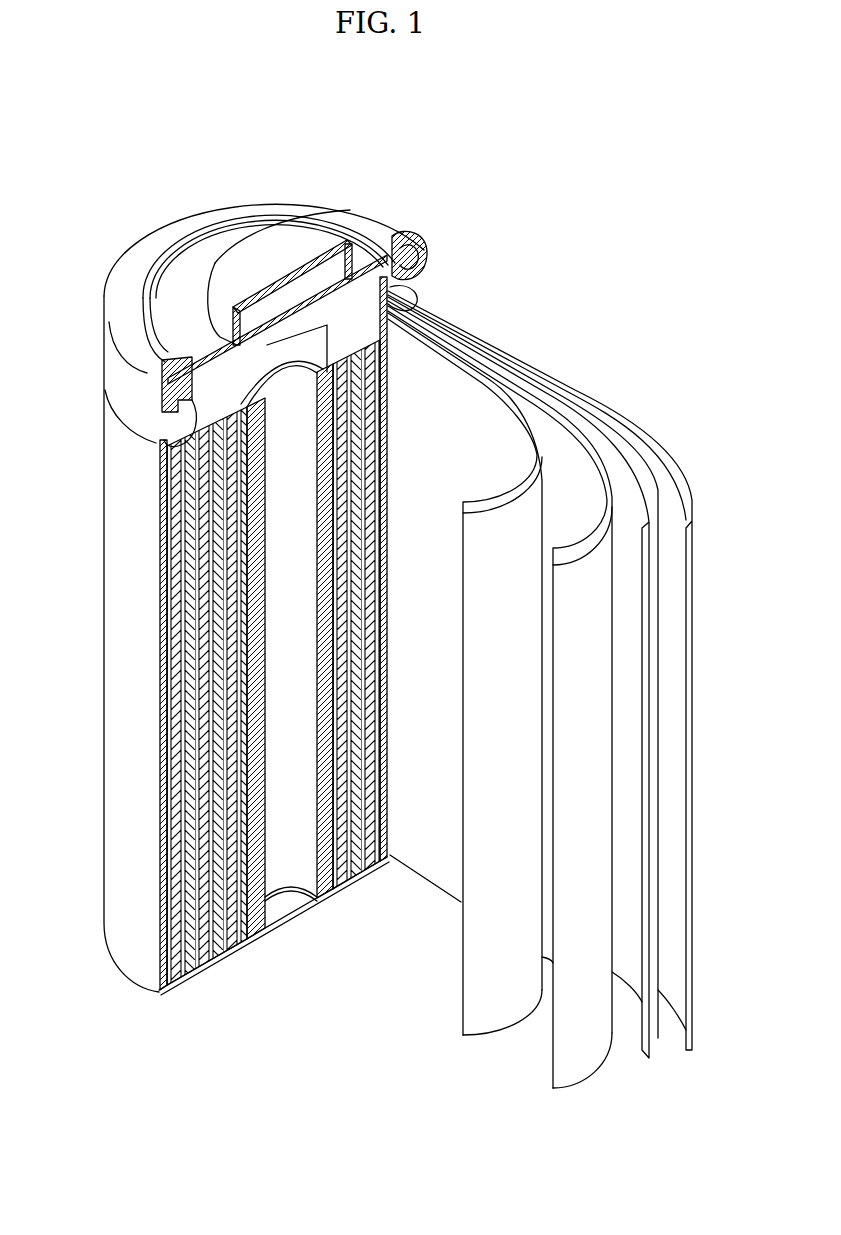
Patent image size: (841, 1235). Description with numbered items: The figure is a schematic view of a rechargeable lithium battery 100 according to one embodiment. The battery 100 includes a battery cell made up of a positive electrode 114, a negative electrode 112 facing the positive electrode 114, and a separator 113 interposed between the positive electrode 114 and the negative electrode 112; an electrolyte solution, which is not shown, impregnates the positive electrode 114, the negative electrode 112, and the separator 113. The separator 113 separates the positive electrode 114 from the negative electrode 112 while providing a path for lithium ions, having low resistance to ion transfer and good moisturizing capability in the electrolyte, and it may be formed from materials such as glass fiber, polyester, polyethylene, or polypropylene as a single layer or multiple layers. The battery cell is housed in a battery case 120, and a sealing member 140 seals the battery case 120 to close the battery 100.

The rechargeable lithium battery 100 is at (483, 197).
The negative electrode 112 is at (662, 462).
The separator 113 is at (485, 390).
The positive electrode 114 is at (550, 427).
The battery case 120 is at (110, 544).
The sealing member 140 is at (267, 253).